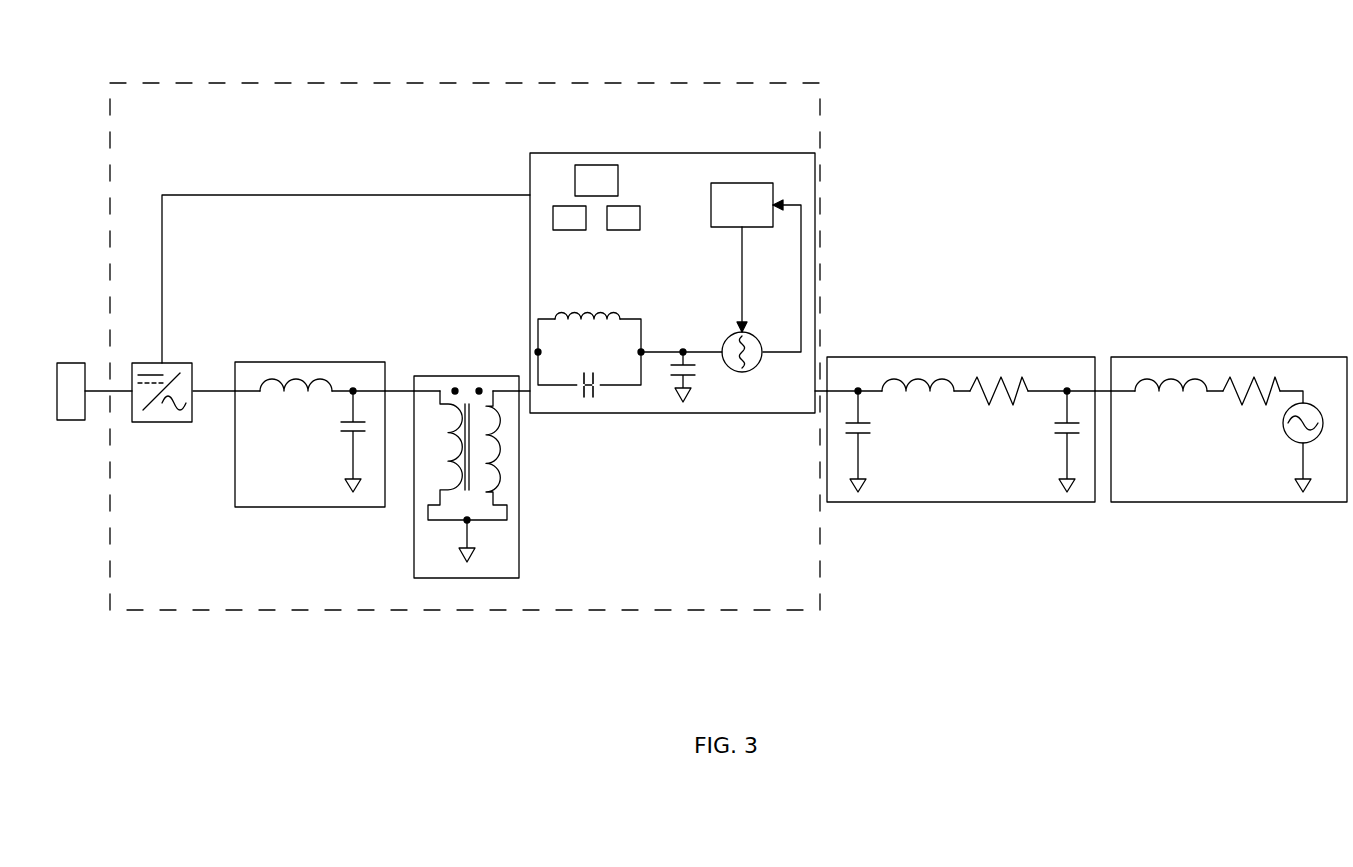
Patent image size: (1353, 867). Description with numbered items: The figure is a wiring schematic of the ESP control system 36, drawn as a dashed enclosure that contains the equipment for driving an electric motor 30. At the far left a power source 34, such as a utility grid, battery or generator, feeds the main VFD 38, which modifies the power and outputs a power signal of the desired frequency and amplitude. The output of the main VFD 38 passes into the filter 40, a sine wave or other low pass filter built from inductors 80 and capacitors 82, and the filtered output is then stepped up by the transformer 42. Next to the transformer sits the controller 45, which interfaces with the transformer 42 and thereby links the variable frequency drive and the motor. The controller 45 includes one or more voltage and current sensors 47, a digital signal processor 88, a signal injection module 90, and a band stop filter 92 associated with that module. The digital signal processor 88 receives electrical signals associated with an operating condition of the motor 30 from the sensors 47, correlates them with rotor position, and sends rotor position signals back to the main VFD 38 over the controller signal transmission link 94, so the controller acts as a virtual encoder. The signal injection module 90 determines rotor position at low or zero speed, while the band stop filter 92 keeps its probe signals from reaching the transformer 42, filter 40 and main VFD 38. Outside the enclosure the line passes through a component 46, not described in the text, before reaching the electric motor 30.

The electric motor 30 is at (1228, 357).
The power source 34 is at (70, 363).
The ESP control system 36 is at (714, 83).
The main VFD 38 is at (162, 422).
The filter 40 is at (310, 362).
The transformer 42 is at (466, 374).
The controller 45 is at (673, 415).
The matching network 46 is at (960, 357).
The voltage and current sensors 47 is at (560, 175).
The inductors 80 is at (297, 380).
The capacitors 82 is at (342, 432).
The digital signal processor 88 is at (742, 183).
The signal injection module 90 is at (742, 372).
The band stop filter 92 is at (617, 386).
The controller signal transmission link 94 is at (346, 195).